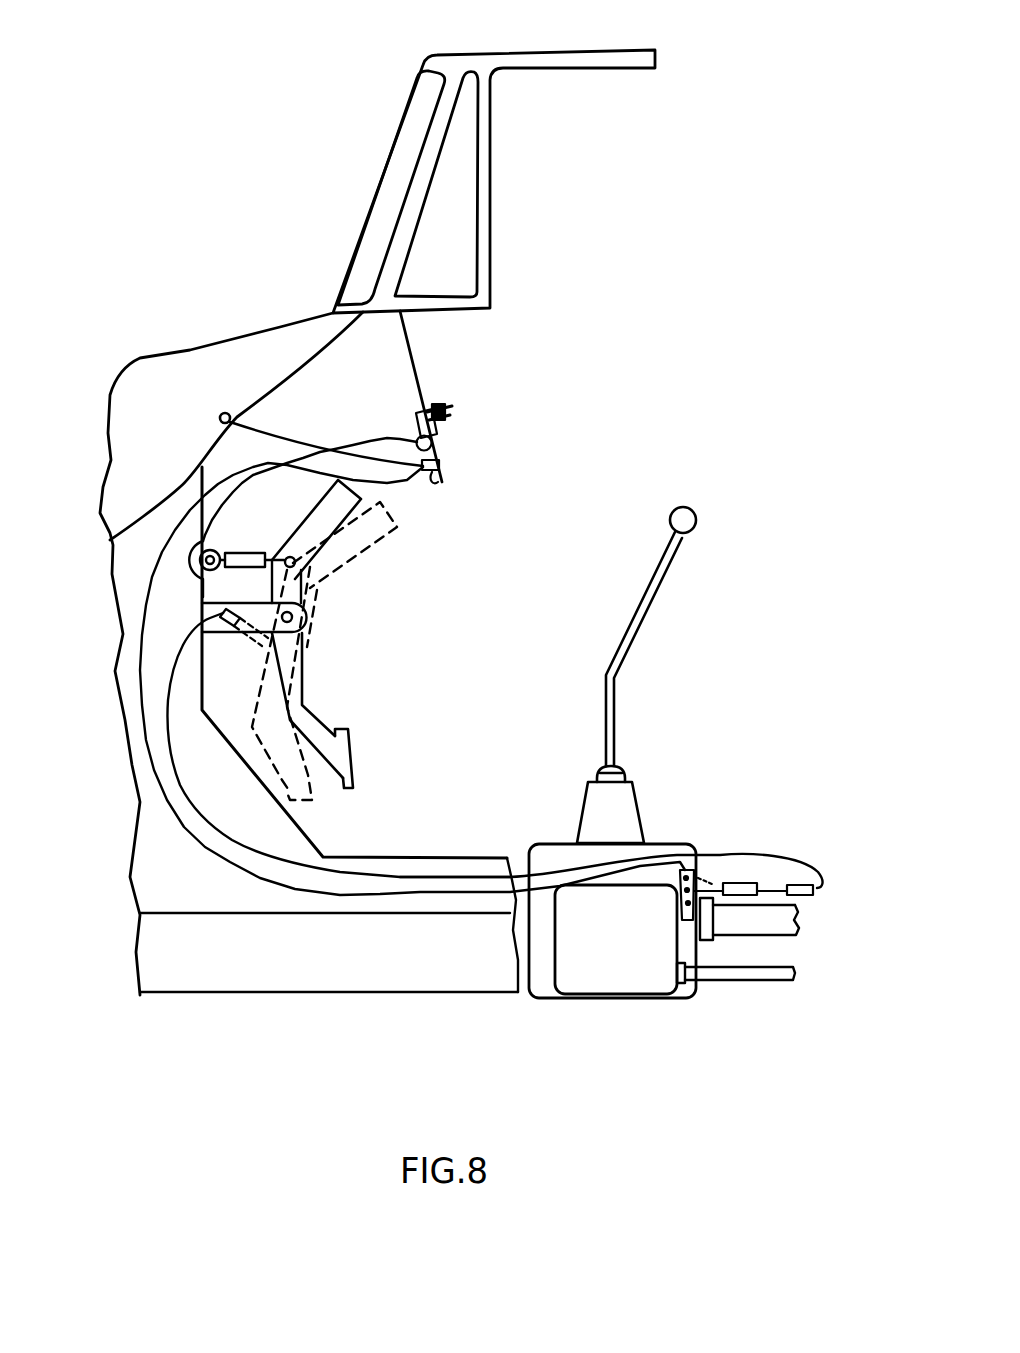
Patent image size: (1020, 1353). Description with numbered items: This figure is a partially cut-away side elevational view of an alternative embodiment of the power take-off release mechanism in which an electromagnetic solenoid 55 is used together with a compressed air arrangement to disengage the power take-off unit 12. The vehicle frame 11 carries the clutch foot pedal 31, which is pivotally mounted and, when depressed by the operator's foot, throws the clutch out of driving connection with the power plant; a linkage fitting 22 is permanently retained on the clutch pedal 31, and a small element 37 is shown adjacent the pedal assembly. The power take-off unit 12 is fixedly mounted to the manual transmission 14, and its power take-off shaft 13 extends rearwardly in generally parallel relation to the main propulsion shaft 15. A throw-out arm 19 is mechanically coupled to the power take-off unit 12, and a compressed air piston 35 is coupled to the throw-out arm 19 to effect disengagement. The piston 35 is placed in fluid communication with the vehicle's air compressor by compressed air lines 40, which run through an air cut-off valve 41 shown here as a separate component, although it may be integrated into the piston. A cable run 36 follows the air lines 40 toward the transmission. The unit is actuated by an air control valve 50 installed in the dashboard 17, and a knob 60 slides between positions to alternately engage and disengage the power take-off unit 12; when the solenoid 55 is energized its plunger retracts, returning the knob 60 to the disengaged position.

The frame 11 is at (318, 990).
The power take-off unit 12 is at (618, 977).
The power take-off shaft 13 is at (730, 973).
The manual transmission 14 is at (545, 987).
The main propulsion shaft 15 is at (783, 927).
The dashboard 17 is at (420, 366).
The throw-out arm 19 is at (685, 870).
The linkage fitting 22 is at (400, 547).
The clutch foot pedal 31 is at (350, 752).
The compressed air piston 35 is at (740, 884).
The cable sheath 36 is at (447, 877).
The pedal stop 37 is at (254, 638).
The compressed air lines 40 is at (257, 428).
The air cut-off valve 41 is at (813, 895).
The air control valve 50 is at (440, 481).
The electromagnetic solenoid 55 is at (437, 440).
The knob 60 is at (447, 420).